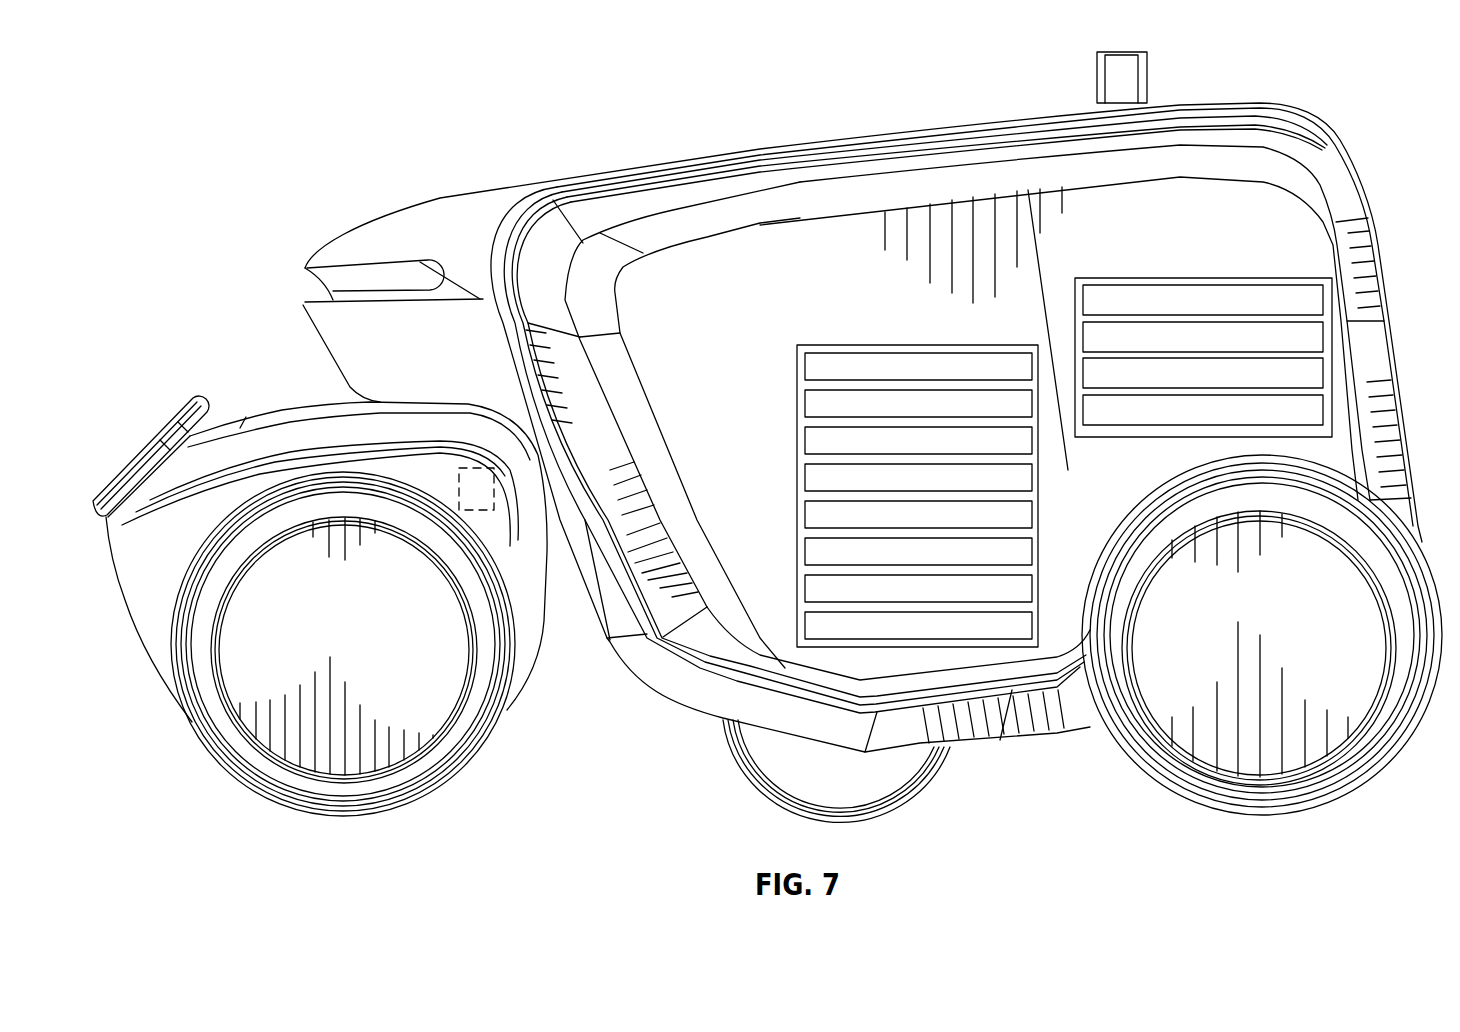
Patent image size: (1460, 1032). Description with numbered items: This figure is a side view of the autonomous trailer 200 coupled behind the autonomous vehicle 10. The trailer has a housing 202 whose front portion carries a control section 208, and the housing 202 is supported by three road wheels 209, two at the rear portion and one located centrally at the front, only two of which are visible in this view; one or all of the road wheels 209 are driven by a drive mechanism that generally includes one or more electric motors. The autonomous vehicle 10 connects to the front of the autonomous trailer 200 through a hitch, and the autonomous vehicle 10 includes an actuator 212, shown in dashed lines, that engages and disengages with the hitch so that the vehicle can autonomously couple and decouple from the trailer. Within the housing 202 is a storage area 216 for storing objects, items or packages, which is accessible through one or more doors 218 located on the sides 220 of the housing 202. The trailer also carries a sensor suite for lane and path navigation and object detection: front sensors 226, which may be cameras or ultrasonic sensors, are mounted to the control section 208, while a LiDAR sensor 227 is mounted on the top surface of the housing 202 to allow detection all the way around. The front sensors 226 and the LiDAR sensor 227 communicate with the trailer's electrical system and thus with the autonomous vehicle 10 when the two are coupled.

The autonomous trailer 200 is at (181, 93).
The autonomous vehicle 10 is at (170, 389).
The housing 202 is at (1343, 185).
The control section 208 is at (388, 230).
The road wheels 209 is at (1202, 788).
The actuator 212 is at (458, 497).
The storage area 216 is at (938, 185).
The doors 218 is at (707, 278).
The sides 220 is at (603, 445).
The front sensors 226 is at (322, 290).
The LiDAR sensor 227 is at (1150, 86).